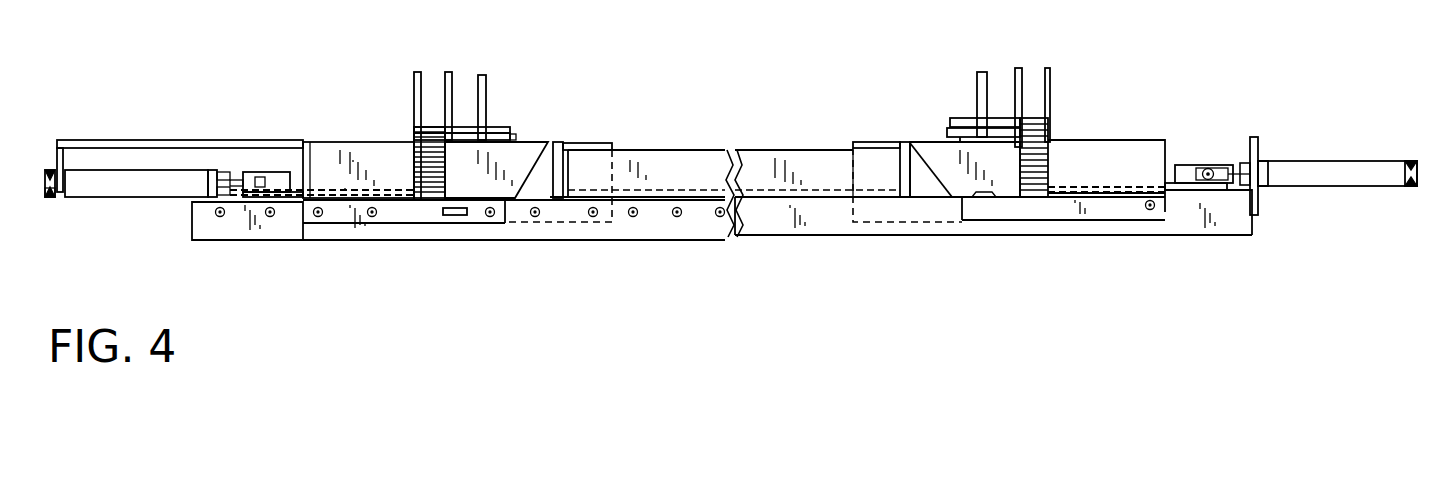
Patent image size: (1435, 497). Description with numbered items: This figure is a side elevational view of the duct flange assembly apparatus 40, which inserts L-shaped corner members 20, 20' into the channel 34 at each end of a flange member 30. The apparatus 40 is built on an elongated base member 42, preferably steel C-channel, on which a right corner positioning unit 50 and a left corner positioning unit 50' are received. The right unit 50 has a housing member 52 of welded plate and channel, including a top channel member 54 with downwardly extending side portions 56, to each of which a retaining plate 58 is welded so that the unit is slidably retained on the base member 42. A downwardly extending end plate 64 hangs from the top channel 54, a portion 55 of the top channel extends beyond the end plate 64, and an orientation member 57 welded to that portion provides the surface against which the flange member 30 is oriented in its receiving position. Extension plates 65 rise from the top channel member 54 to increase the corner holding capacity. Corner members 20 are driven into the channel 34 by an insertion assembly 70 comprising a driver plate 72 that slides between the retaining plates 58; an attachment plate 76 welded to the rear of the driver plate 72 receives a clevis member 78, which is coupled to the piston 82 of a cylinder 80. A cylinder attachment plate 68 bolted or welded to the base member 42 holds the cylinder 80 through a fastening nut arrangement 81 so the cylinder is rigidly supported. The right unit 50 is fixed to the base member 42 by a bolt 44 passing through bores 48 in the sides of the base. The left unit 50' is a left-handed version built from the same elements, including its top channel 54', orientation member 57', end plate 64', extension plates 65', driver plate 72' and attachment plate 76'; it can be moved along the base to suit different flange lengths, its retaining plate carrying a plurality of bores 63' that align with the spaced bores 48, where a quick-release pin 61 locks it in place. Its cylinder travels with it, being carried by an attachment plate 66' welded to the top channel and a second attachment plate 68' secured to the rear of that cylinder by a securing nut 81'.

The corner member 20 is at (967, 85).
The second corner member 20' is at (495, 86).
The flange member 30 is at (716, 182).
The channel 34 is at (650, 188).
The duct flange assembly apparatus 40 is at (672, 285).
The base member 42 is at (913, 232).
The bolt 44 is at (1150, 210).
The bores 48 is at (220, 216).
The right corner positioning unit 50 is at (1070, 130).
The left corner positioning unit 50' is at (358, 122).
The housing member 52 is at (930, 118).
The top channel member 54 is at (1106, 141).
The top channel member 54' is at (512, 125).
The portion of top channel 55 is at (872, 111).
The side portions 56 is at (1122, 178).
The orientation member 57 is at (882, 158).
The orientation member 57' is at (597, 158).
The retaining plate 58 is at (1063, 208).
The quick-release pin 61 is at (455, 216).
The bores 63' is at (438, 254).
The end plate 64 is at (876, 218).
The end plate 64' is at (589, 146).
The extension plates 65 is at (1019, 73).
The extension plates 65' is at (482, 101).
The attachment plate 66' is at (180, 117).
The cylinder attachment plate 68 is at (1313, 156).
The second attachment plate 68' is at (76, 140).
The insertion assembly 70 is at (1283, 130).
The driver plate 72 is at (1212, 233).
The driver plate 72' is at (296, 144).
The attachment plate 76 is at (1191, 137).
The attachment plate 76' is at (266, 122).
The clevis member 78 is at (1221, 167).
The cylinder 80 is at (133, 173).
The fastening nut arrangement 81 is at (1273, 135).
The securing nut 81' is at (87, 219).
The piston 82 is at (1236, 166).